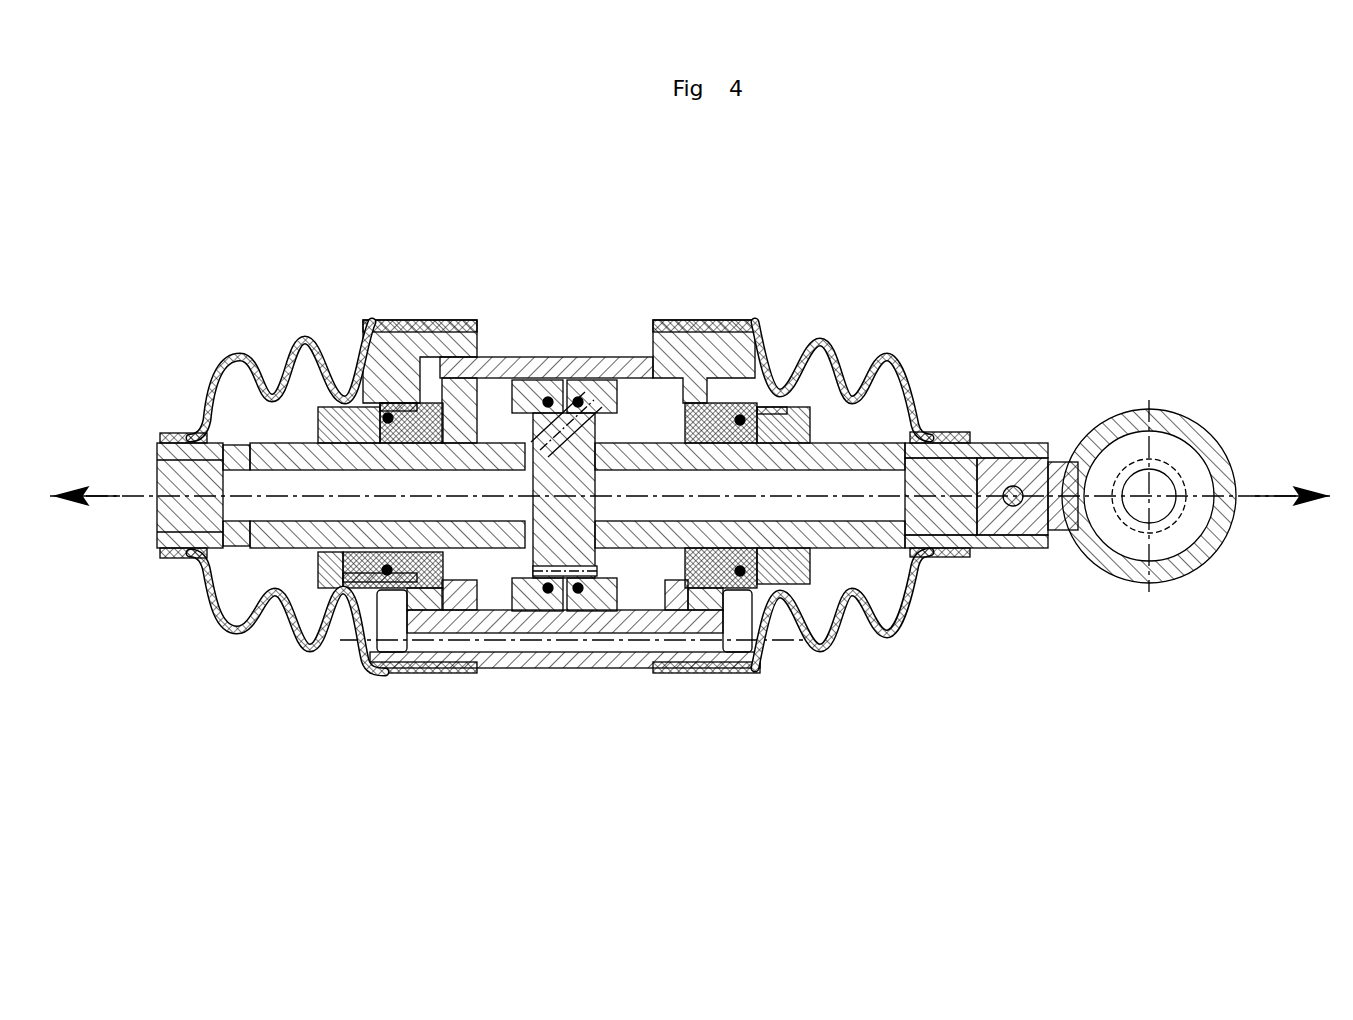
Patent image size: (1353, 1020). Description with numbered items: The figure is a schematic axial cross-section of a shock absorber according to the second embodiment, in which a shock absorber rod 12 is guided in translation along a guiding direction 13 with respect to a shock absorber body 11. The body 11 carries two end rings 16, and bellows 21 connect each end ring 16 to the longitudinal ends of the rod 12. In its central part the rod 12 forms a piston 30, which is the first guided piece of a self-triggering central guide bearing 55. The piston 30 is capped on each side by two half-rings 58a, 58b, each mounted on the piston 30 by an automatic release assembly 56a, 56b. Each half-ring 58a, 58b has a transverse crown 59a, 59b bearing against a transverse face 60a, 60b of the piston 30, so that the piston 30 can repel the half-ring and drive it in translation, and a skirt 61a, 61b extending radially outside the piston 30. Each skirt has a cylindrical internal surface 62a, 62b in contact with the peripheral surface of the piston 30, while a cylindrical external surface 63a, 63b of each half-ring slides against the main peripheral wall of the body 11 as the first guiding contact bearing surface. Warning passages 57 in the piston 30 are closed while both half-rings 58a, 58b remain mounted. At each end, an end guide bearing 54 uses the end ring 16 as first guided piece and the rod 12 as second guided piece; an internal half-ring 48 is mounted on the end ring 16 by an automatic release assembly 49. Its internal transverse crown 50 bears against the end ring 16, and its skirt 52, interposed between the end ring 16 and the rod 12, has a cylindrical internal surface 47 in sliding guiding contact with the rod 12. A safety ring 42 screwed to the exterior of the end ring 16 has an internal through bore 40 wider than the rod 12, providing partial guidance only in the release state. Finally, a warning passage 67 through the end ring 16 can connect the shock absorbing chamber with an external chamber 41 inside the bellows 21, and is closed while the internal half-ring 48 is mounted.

The shock absorber body 11 is at (698, 356).
The shock absorber rod 12 is at (1045, 513).
The guiding direction 13 is at (103, 498).
The end ring 16 is at (412, 350).
The bellows 21 is at (243, 403).
The piston 30 is at (560, 508).
The internal through bore 40 is at (380, 403).
The external chamber 41 is at (243, 405).
The safety ring 42 is at (335, 395).
The cylindrical internal surface 47 is at (768, 345).
The internal half-ring 48 is at (445, 400).
The automatic release assembly 49 is at (398, 398).
The internal transverse crown 50 is at (440, 598).
The skirt 52 is at (745, 333).
The end guide bearing 54 is at (316, 586).
The central guide bearing 55 is at (562, 645).
The automatic release assembly 56a is at (556, 380).
The automatic release assembly 56b is at (584, 380).
The warning passage 57 is at (530, 425).
The half-ring 58a is at (527, 612).
The half-ring 58b is at (600, 612).
The transverse crown 59a is at (462, 380).
The transverse crown 59b is at (665, 385).
The transverse face 60a is at (537, 570).
The transverse face 60b is at (604, 385).
The skirt 61a is at (546, 400).
The skirt 61b is at (580, 400).
The cylindrical internal surface 62a is at (545, 592).
The cylindrical internal surface 62b is at (580, 592).
The cylindrical external surface 63a is at (550, 625).
The cylindrical external surface 63b is at (578, 630).
The warning passage 67 is at (388, 418).